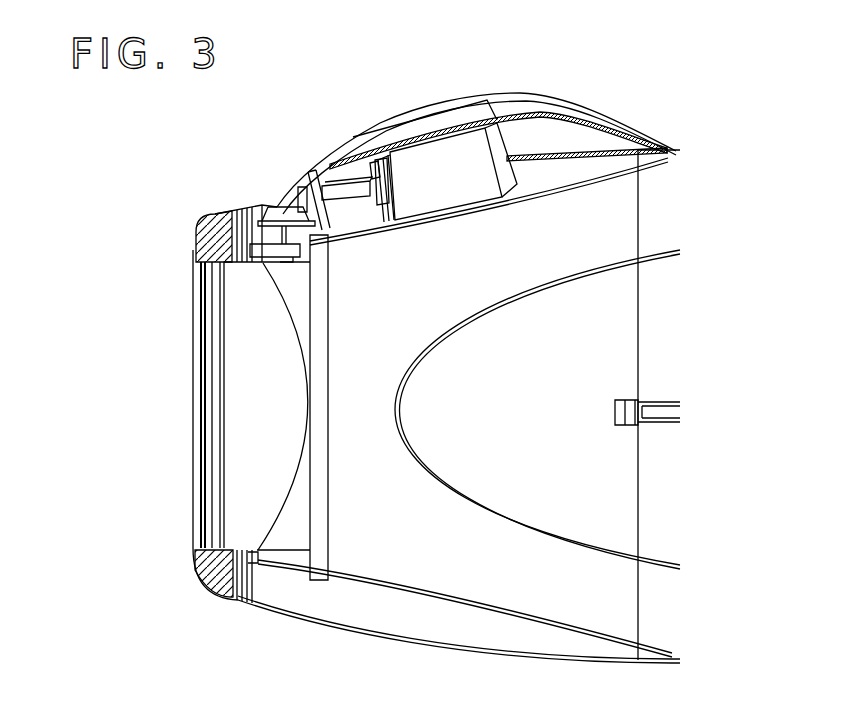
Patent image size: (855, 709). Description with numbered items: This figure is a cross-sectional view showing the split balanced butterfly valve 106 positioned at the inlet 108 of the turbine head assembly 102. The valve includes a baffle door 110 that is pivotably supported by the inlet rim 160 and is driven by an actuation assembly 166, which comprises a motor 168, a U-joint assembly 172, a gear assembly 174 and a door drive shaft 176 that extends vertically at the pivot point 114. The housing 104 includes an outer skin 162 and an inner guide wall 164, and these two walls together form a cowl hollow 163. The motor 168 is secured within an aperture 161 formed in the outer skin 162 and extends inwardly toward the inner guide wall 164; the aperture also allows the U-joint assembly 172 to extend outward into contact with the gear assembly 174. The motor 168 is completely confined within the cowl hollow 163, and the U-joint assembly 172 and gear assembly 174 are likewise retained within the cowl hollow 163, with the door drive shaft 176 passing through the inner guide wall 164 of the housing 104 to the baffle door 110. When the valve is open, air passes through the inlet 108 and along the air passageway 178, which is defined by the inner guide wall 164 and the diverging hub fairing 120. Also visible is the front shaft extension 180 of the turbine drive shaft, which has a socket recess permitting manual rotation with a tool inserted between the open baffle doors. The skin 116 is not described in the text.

The turbine head assembly 102 is at (248, 610).
The housing 104 is at (420, 656).
The split balanced butterfly valve 106 is at (205, 524).
The inlet 108 is at (206, 392).
The baffle door 110 is at (282, 451).
The pivot point 114 is at (242, 258).
The outer skin 116 is at (502, 100).
The diverging hub fairing 120 is at (522, 522).
The inlet rim 160 is at (196, 560).
The aperture 161 is at (515, 138).
The outer skin 162 is at (587, 147).
The cowl hollow 163 is at (568, 165).
The inner guide wall 164 is at (617, 175).
The actuation assembly 166 is at (410, 138).
The motor 168 is at (465, 194).
The U-joint assembly 172 is at (357, 190).
The gear assembly 174 is at (262, 200).
The door drive shaft 176 is at (262, 262).
The air passageway 178 is at (395, 362).
The front shaft extension 180 is at (617, 427).